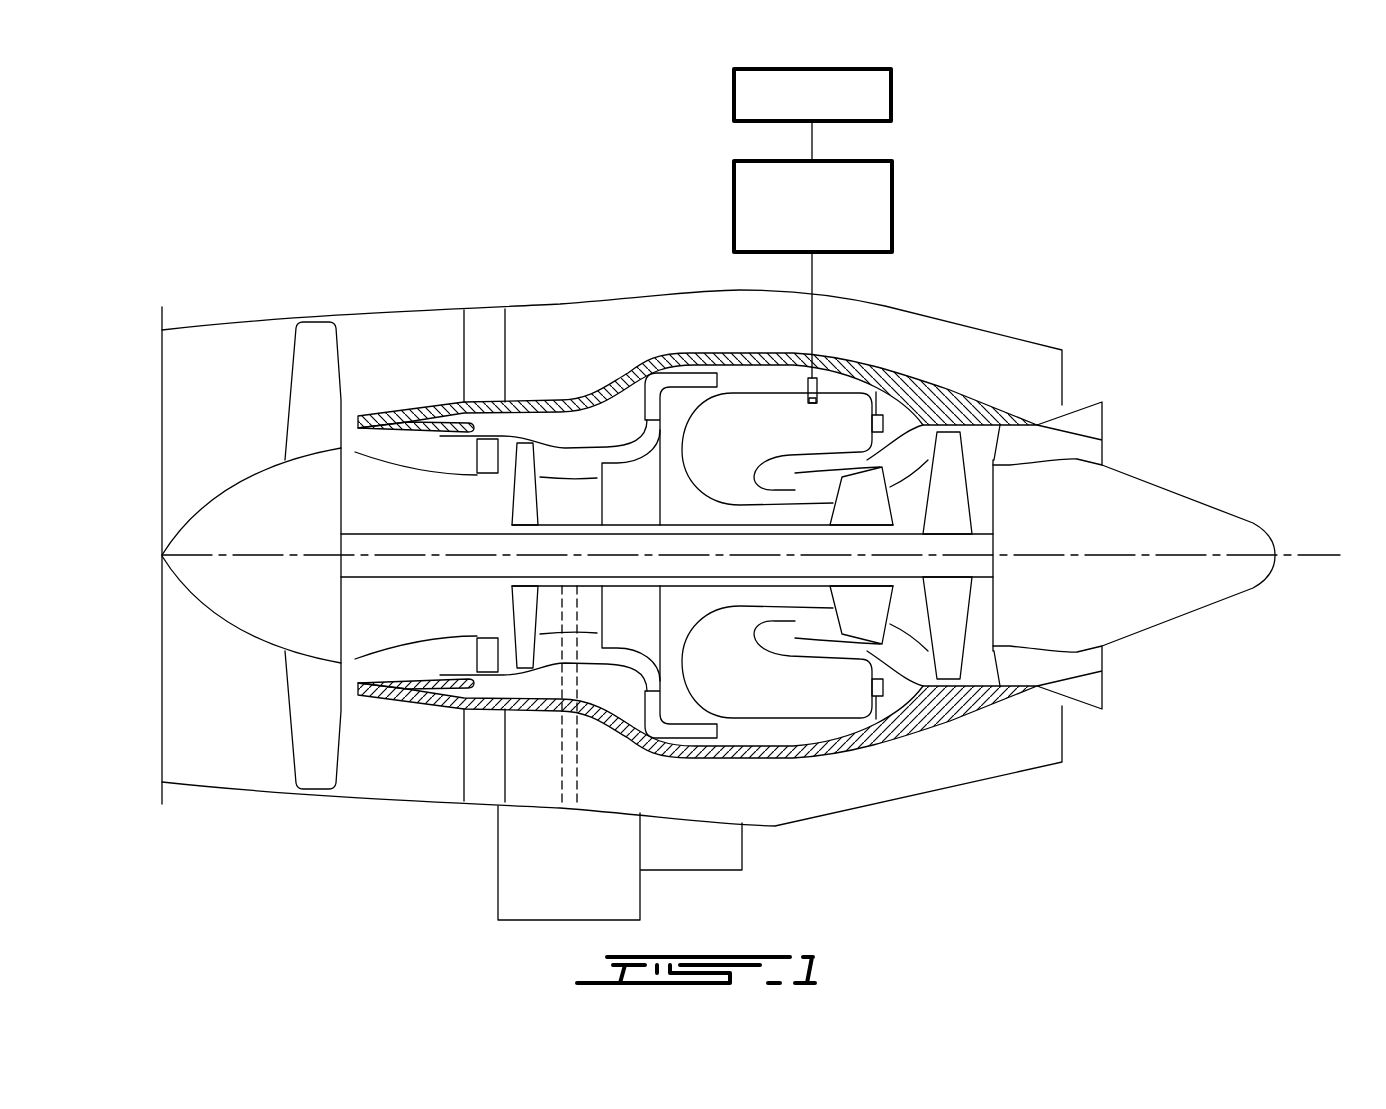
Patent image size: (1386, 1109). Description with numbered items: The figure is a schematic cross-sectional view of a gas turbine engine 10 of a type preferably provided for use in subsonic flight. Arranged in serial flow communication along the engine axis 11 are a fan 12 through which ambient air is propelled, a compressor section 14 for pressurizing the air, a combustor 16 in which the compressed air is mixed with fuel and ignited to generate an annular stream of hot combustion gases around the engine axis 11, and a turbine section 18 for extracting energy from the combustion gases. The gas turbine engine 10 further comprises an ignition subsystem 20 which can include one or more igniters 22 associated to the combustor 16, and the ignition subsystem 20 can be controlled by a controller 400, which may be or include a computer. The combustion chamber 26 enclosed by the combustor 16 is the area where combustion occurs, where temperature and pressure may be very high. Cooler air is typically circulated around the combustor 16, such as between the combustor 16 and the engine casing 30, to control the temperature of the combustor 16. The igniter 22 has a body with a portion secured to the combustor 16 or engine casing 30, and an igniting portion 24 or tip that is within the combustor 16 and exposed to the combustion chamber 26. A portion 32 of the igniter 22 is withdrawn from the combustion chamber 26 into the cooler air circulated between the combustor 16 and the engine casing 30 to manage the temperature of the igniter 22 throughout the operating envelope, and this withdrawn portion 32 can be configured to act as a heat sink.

The gas turbine engine 10 is at (1044, 248).
The engine axis 11 is at (1313, 555).
The fan 12 is at (308, 707).
The compressor section 14 is at (560, 457).
The combustor 16 is at (807, 384).
The turbine section 18 is at (907, 620).
The ignition subsystem 20 is at (892, 210).
The igniter 22 is at (820, 383).
The igniting portion 24 is at (812, 403).
The combustion chamber 26 is at (748, 453).
The engine casing 30 is at (876, 392).
The portion of the igniter 32 is at (745, 412).
The controller 400 is at (891, 95).